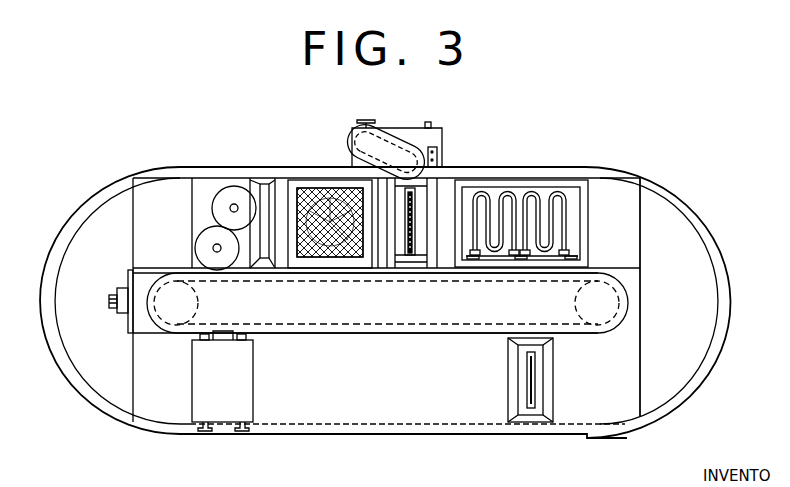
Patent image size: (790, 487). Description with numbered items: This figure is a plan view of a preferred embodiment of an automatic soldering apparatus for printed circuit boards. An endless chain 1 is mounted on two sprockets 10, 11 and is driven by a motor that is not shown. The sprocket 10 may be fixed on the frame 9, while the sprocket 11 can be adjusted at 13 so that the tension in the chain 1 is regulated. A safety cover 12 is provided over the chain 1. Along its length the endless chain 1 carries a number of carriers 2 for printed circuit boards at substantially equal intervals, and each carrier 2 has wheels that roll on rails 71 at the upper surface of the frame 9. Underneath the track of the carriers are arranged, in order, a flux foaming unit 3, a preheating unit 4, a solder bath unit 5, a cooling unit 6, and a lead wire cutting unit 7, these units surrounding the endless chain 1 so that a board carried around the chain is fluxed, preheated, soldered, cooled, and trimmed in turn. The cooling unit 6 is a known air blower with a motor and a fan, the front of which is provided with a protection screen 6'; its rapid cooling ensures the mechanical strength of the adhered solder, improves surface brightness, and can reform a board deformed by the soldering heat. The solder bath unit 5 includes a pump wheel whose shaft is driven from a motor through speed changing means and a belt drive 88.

The endless chain 1 is at (376, 334).
The carrier 2 is at (229, 418).
The flux foaming unit 3 is at (533, 385).
The preheating unit 4 is at (528, 186).
The solder bath unit 5 is at (417, 201).
The cooling unit 6 is at (330, 198).
The protection screen 6' is at (330, 193).
The lead wire cutting unit 7 is at (207, 186).
The frame 9 is at (603, 236).
The sprocket 10 is at (607, 292).
The sprocket 11 is at (158, 283).
The safety cover 12 is at (434, 334).
The adjustment 13 is at (110, 303).
The rails 71 is at (599, 439).
The belt drive 88 is at (401, 150).